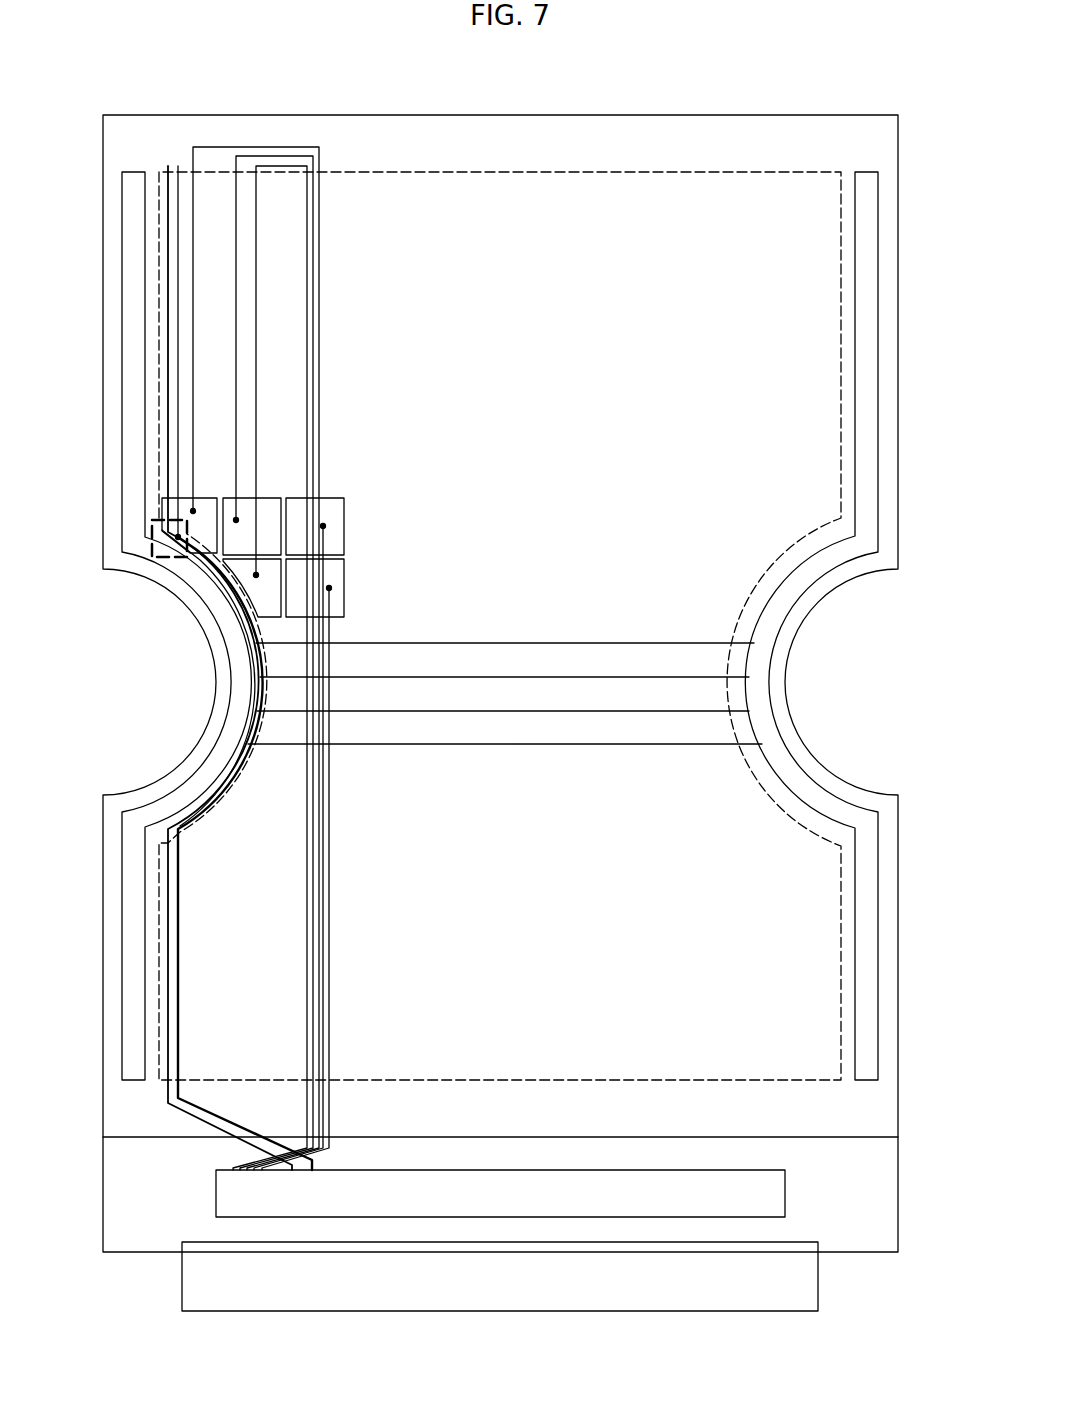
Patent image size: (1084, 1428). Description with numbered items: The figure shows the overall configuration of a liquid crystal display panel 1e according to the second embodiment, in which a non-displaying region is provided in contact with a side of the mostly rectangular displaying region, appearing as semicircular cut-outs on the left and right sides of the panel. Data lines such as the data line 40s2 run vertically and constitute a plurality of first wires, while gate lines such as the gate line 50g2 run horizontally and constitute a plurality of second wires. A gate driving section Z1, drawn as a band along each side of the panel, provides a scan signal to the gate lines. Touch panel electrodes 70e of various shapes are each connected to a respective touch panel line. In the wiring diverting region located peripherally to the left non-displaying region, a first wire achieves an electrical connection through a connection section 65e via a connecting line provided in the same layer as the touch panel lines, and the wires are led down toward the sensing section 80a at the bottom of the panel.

The liquid crystal display panel 1e is at (786, 92).
The gate driving section Z1 is at (135, 286).
The data line 40s2 is at (167, 187).
The connection section 65e is at (152, 550).
The touch panel electrode 70e is at (207, 505).
The gate line 50g2 is at (695, 641).
The sensing section 80a is at (772, 1196).